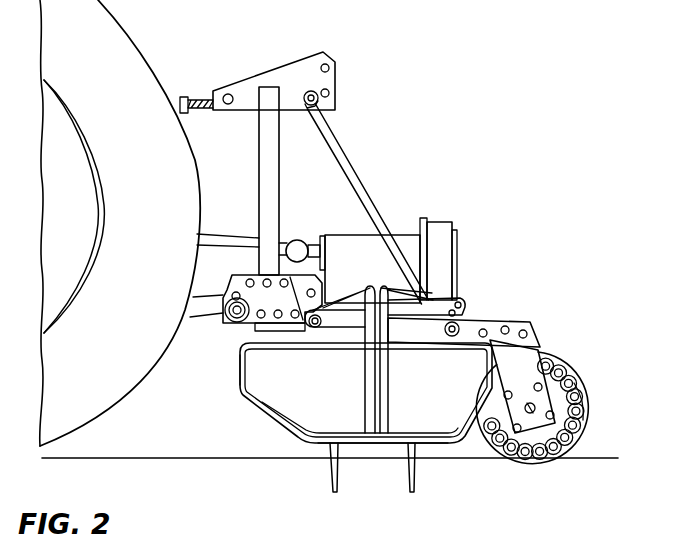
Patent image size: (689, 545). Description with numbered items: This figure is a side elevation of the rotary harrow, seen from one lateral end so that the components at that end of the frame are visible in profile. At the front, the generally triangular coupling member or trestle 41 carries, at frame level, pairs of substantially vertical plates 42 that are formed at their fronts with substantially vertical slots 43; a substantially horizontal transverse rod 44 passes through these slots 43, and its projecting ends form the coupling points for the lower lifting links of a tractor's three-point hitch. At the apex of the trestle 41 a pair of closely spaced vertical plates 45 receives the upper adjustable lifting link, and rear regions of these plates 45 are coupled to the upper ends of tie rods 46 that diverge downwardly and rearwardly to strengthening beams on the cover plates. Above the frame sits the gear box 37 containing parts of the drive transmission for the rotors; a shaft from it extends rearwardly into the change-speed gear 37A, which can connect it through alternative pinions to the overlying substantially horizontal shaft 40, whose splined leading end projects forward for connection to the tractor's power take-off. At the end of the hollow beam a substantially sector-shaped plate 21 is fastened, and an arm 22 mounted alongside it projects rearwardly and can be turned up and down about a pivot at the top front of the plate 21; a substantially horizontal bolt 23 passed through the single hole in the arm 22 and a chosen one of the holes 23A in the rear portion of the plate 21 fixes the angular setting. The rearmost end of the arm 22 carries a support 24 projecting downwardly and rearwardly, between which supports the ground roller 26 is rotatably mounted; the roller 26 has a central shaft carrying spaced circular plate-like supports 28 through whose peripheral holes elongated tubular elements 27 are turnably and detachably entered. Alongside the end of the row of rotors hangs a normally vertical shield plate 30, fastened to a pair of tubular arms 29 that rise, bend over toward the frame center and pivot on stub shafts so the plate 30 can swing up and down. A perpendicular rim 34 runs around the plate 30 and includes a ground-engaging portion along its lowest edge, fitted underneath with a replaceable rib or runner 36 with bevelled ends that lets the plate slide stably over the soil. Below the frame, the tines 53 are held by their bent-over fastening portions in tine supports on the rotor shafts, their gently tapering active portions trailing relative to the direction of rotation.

The sector-shaped plates 21 is at (459, 297).
The arms 22 is at (352, 332).
The bolts 23 is at (451, 336).
The holes 23A is at (458, 314).
The supports 24 is at (536, 352).
The ground roller 26 is at (588, 436).
The elongated elements 27 is at (566, 372).
The plate-like supports 28 is at (582, 397).
The arms 29 is at (372, 396).
The shield plates 30 is at (264, 388).
The rim 34 is at (242, 373).
The rib or runner 36 is at (381, 448).
The gear box 37 is at (357, 240).
The change-speed gear 37A is at (440, 222).
The upper horizontal shaft 40 is at (320, 244).
The coupling member or trestle 41 is at (262, 152).
The vertical plates 42 is at (236, 276).
The vertical slots 43 is at (236, 300).
The horizontal rod 44 is at (236, 322).
The vertical plates 45 is at (272, 84).
The tie rods 46 is at (350, 162).
The tines 53 is at (323, 474).